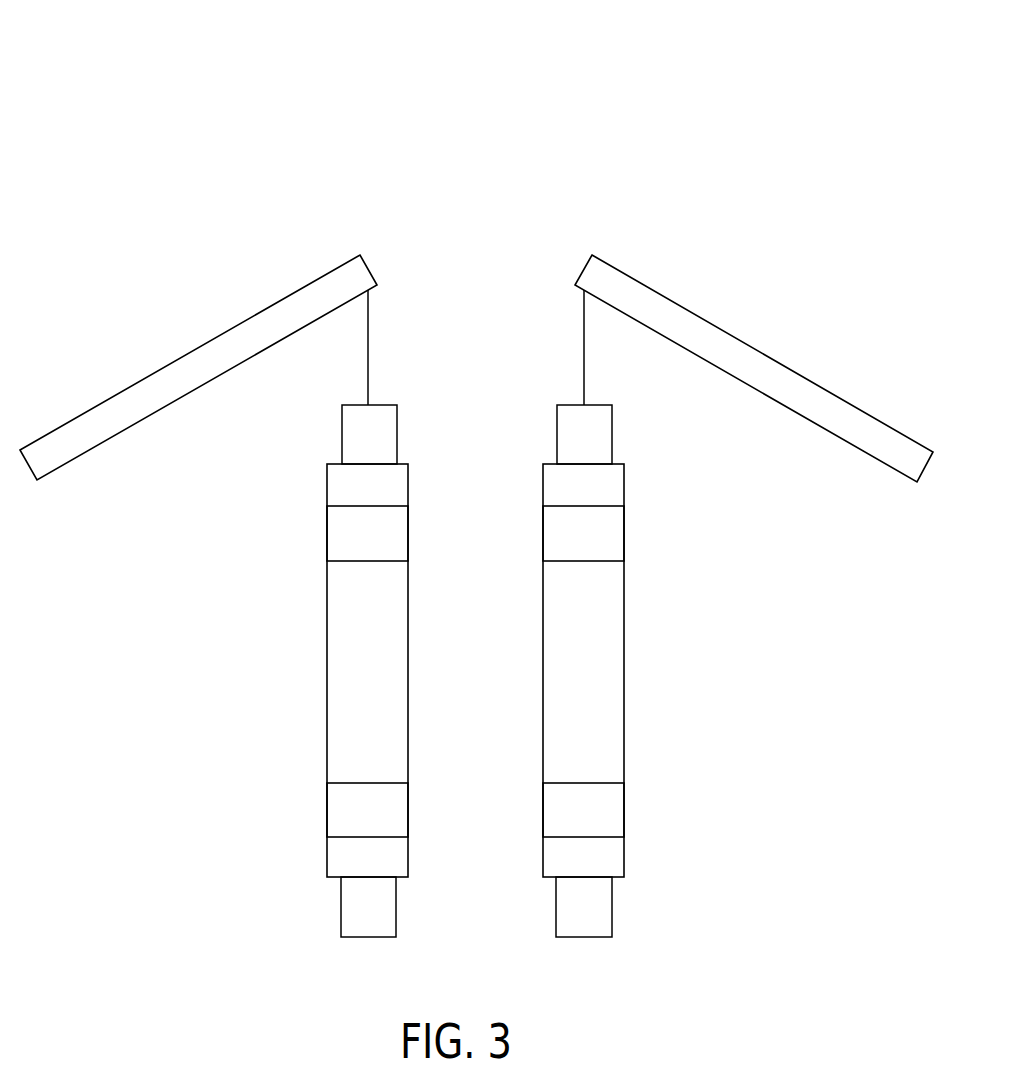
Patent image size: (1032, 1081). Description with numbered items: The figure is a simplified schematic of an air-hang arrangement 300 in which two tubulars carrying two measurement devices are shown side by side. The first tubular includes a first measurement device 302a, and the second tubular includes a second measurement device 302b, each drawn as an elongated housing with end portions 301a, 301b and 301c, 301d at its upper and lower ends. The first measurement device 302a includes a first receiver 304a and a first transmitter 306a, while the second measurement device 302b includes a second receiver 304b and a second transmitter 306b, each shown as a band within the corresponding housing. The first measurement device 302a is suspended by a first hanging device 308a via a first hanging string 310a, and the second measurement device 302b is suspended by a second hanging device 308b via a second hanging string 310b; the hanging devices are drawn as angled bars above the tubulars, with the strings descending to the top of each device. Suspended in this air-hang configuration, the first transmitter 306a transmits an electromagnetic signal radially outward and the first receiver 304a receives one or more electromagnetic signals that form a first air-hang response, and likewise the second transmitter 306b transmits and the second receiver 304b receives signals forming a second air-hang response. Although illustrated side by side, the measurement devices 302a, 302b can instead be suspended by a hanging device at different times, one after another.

The imaging system 300 is at (220, 112).
The end cap 301a is at (358, 438).
The end cap 301b is at (362, 920).
The end cap 301c is at (565, 438).
The end cap 301d is at (567, 920).
The first measurement device 302a is at (343, 662).
The second measurement device 302b is at (550, 662).
The first receiver 304a is at (343, 540).
The second receiver 304b is at (550, 540).
The first transmitter 306a is at (343, 817).
The second transmitter 306b is at (550, 817).
The first hanging device 308a is at (170, 362).
The second hanging device 308b is at (770, 355).
The first hanging string 310a is at (370, 348).
The second hanging string 310b is at (582, 348).